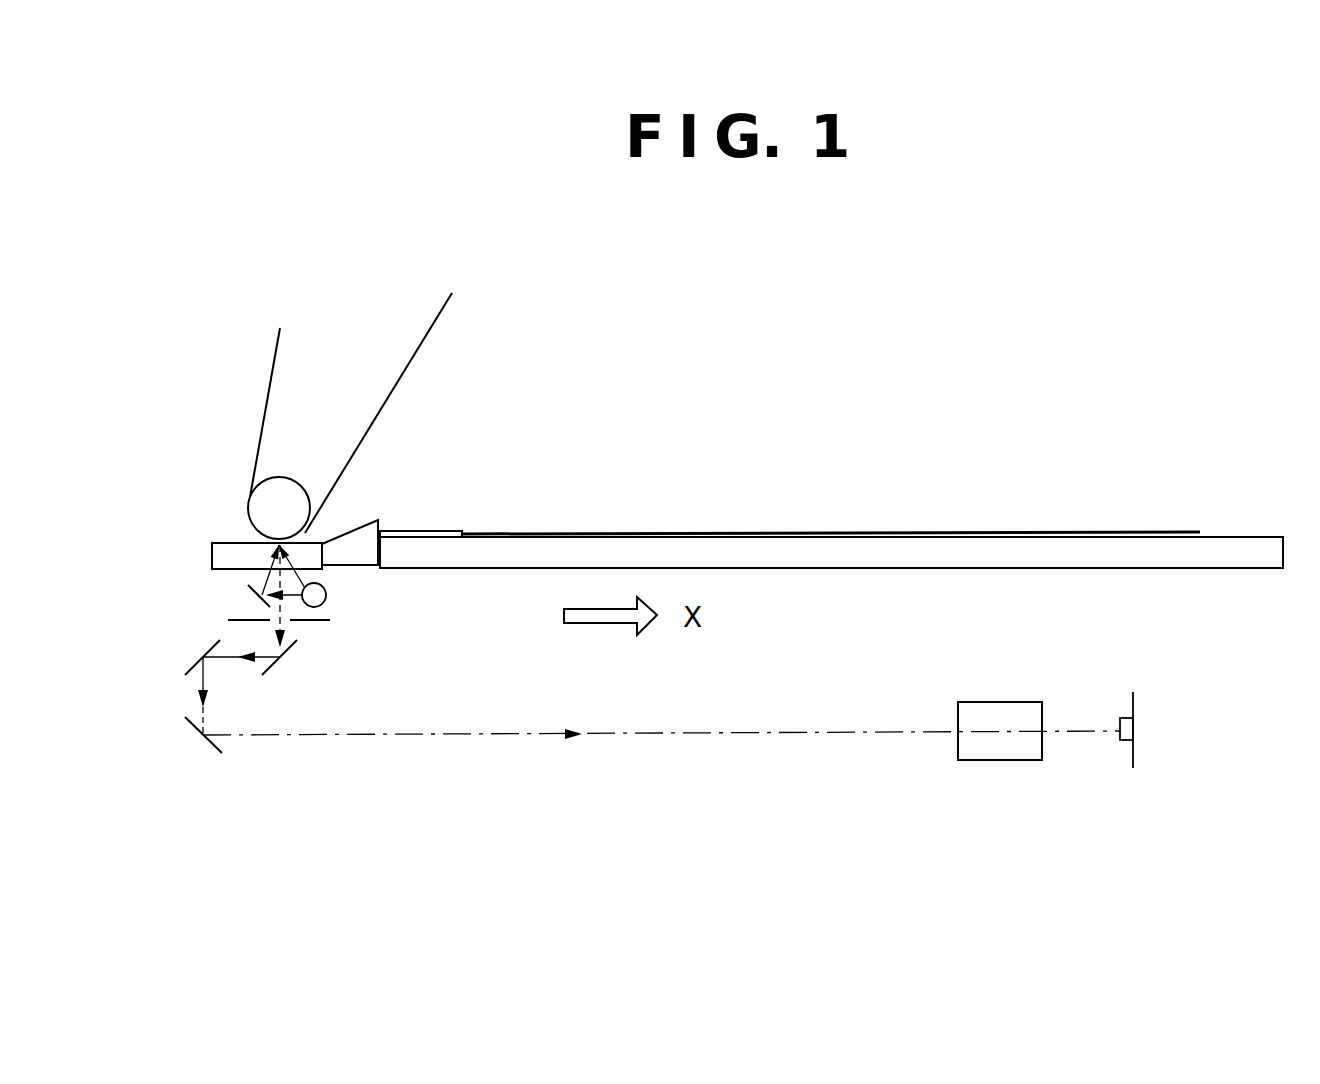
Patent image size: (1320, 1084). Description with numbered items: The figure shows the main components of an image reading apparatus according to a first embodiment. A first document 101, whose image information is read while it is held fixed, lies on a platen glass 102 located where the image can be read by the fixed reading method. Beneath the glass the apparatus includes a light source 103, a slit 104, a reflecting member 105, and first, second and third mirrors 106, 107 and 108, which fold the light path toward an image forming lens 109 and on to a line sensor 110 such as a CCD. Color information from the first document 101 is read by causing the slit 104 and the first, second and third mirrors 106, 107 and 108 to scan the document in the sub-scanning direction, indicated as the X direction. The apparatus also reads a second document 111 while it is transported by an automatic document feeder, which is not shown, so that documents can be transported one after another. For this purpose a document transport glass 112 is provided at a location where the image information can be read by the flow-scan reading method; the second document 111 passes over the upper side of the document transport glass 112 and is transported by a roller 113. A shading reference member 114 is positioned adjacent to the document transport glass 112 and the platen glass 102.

The first document 101 is at (1150, 530).
The platen glass 102 is at (1240, 542).
The light source 103 is at (327, 595).
The slit 104 is at (318, 622).
The reflecting member 105 is at (253, 593).
The first mirror 106 is at (273, 670).
The second mirror 107 is at (197, 667).
The third mirror 108 is at (192, 723).
The image forming lens 109 is at (990, 710).
The line sensor 110 is at (1128, 742).
The second document 111 is at (273, 358).
The document transport glass 112 is at (217, 555).
The roller 113 is at (257, 520).
The shading reference member 114 is at (418, 528).